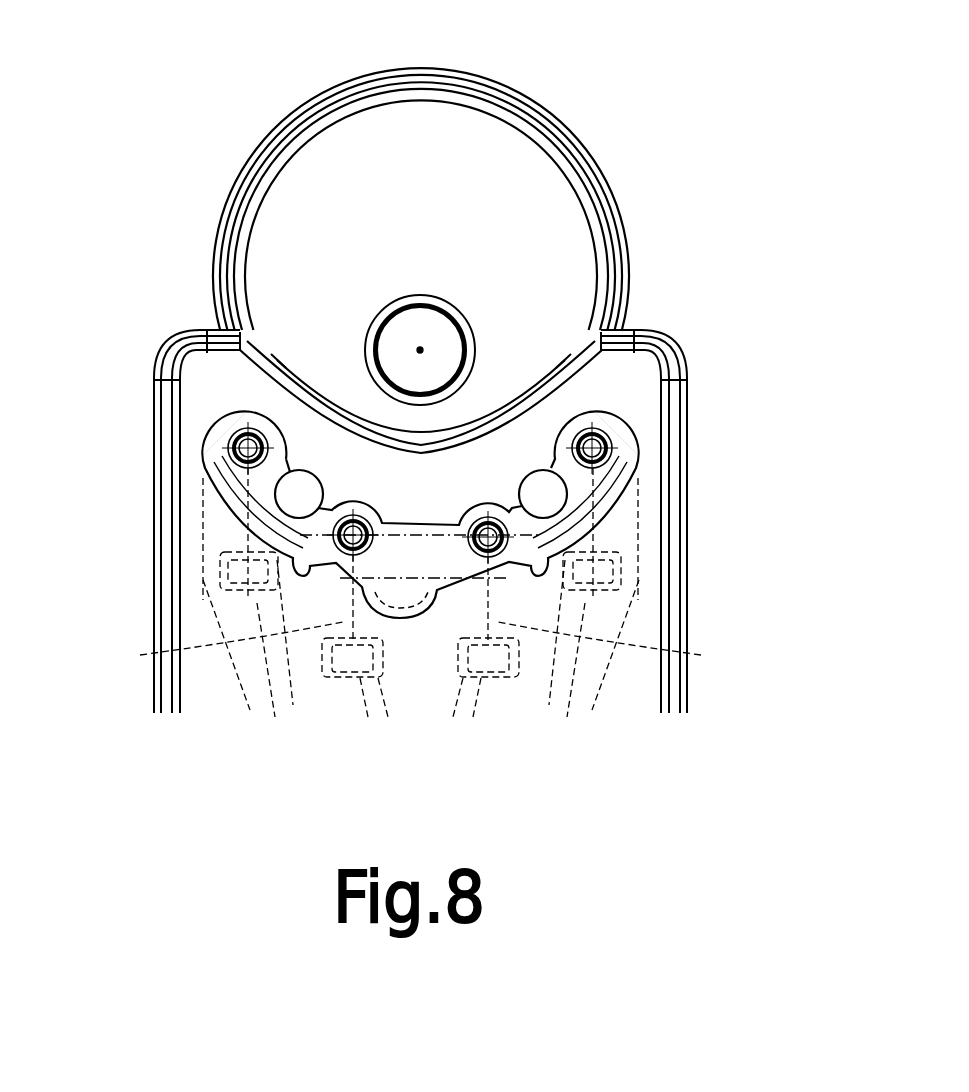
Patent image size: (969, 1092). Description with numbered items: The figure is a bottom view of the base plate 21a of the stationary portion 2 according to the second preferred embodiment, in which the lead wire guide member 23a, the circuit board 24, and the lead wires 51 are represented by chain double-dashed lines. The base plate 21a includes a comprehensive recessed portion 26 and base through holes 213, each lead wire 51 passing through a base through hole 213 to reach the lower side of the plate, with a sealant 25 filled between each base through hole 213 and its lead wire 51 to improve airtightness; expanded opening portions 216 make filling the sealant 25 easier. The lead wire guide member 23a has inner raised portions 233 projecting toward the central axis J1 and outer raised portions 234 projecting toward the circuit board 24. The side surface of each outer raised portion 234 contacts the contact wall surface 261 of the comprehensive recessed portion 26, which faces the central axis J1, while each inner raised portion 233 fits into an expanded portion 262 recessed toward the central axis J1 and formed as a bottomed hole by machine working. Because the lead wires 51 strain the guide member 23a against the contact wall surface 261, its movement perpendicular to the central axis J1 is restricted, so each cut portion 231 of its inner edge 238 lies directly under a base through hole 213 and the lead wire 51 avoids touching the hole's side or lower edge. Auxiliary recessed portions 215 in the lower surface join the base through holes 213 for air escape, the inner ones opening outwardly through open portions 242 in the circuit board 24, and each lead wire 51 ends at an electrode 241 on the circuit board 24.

The stationary portion 2 is at (206, 60).
The base plate 21a is at (278, 222).
The inner raised portion 233 is at (225, 335).
The inner edge 238 is at (421, 525).
The central axis J1 is at (420, 350).
The lead wire guide member 23a is at (628, 455).
The base through hole 213 is at (246, 445).
The expanded opening portion 216 is at (300, 470).
The sealant 25 is at (218, 434).
The comprehensive recessed portion 26 is at (612, 440).
The auxiliary recessed portion 215 is at (205, 465).
The cut portion 231 is at (255, 520).
The outer raised portion 234 is at (218, 563).
The expanded portion 262 is at (262, 530).
The circuit board 24 is at (270, 600).
The electrode 241 is at (320, 630).
The open portion 242 is at (322, 640).
The lead wire 51 is at (322, 600).
The contact wall surface 261 is at (452, 590).